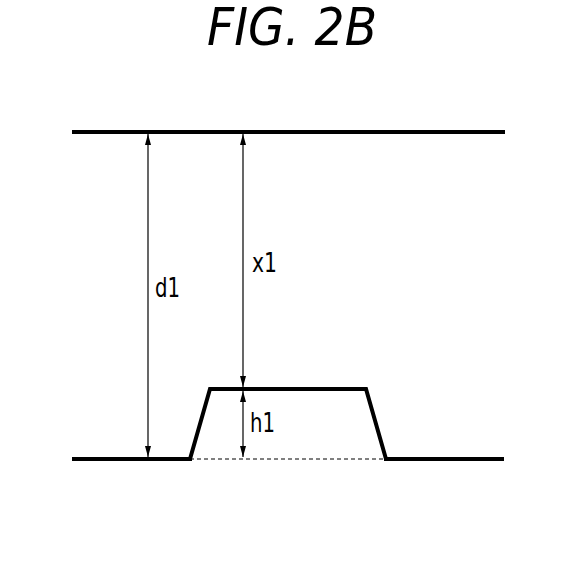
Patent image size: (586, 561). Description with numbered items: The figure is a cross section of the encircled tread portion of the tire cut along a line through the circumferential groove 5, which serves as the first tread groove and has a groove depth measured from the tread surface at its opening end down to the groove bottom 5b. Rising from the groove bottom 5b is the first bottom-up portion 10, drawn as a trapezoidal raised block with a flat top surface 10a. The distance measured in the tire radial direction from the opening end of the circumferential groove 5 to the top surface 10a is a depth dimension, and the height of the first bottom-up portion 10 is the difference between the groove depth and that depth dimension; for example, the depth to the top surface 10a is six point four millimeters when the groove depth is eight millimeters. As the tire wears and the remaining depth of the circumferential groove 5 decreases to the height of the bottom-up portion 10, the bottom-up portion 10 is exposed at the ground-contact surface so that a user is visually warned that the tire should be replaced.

The circumferential groove 5 is at (382, 175).
The lower surface of substrate 5b is at (110, 462).
The first bottom-up portion 10 is at (330, 420).
The top surface 10a is at (301, 387).